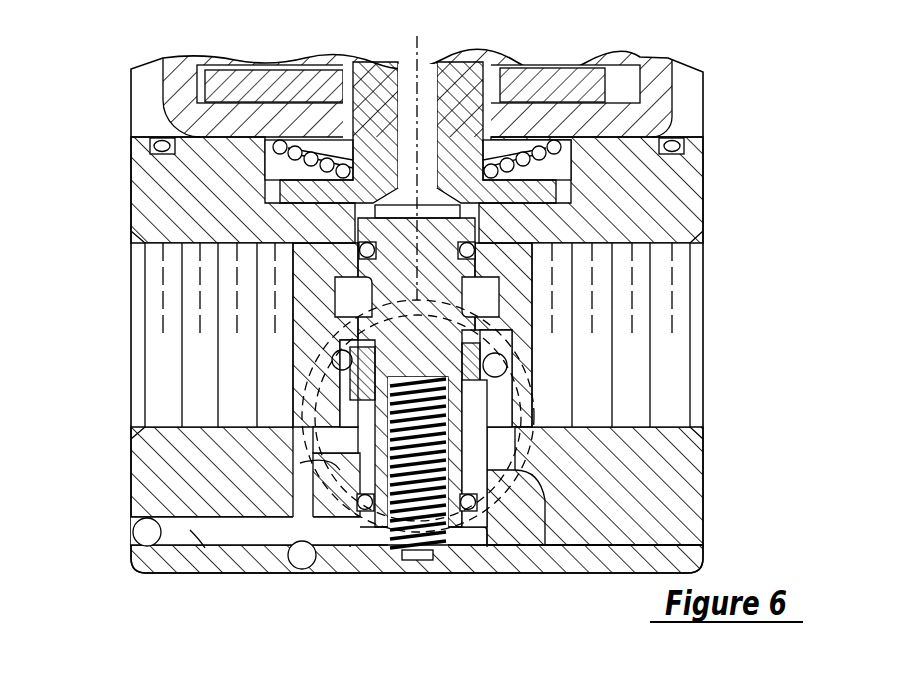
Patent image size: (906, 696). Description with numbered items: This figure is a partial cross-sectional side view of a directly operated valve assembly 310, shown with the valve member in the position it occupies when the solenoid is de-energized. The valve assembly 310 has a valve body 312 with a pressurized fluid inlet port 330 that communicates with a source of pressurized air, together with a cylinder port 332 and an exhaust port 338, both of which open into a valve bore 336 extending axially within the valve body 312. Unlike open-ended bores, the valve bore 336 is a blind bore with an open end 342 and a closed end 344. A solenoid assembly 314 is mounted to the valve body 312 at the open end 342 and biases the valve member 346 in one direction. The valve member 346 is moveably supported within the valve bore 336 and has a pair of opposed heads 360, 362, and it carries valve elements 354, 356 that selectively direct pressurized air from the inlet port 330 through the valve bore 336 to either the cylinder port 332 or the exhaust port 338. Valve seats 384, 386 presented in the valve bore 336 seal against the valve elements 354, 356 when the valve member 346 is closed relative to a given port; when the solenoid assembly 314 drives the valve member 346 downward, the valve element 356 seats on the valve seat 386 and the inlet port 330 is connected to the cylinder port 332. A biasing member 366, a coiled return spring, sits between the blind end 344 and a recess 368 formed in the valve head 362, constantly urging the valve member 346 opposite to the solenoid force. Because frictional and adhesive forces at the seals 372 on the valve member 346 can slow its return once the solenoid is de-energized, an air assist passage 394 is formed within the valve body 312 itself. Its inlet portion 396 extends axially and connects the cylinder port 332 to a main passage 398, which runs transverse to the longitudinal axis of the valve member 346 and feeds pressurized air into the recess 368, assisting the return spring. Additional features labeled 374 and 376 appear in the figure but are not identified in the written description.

The valve assembly 310 is at (109, 150).
The valve body 312 is at (703, 184).
The solenoid assembly 314 is at (703, 103).
The pressurized fluid inlet port 330 is at (690, 321).
The cylinder port 332 is at (145, 321).
The valve bore 336 is at (474, 453).
The exhaust port 338 is at (540, 526).
The open end 342 is at (469, 212).
The closed end 344 is at (350, 541).
The valve member 346 is at (470, 292).
The valve element 354 is at (500, 368).
The valve element 356 is at (492, 396).
The valve head 360 is at (480, 232).
The valve head 362 is at (498, 532).
The biasing member 366 is at (466, 548).
The recess 368 is at (482, 317).
The seals 372 is at (358, 252).
The bearing 374 is at (356, 205).
The passage 376 is at (334, 472).
The valve seat 384 is at (356, 364).
The valve seat 386 is at (345, 376).
The air assist passage 394 is at (200, 546).
The inlet portion 396 is at (300, 463).
The main passage 398 is at (190, 530).